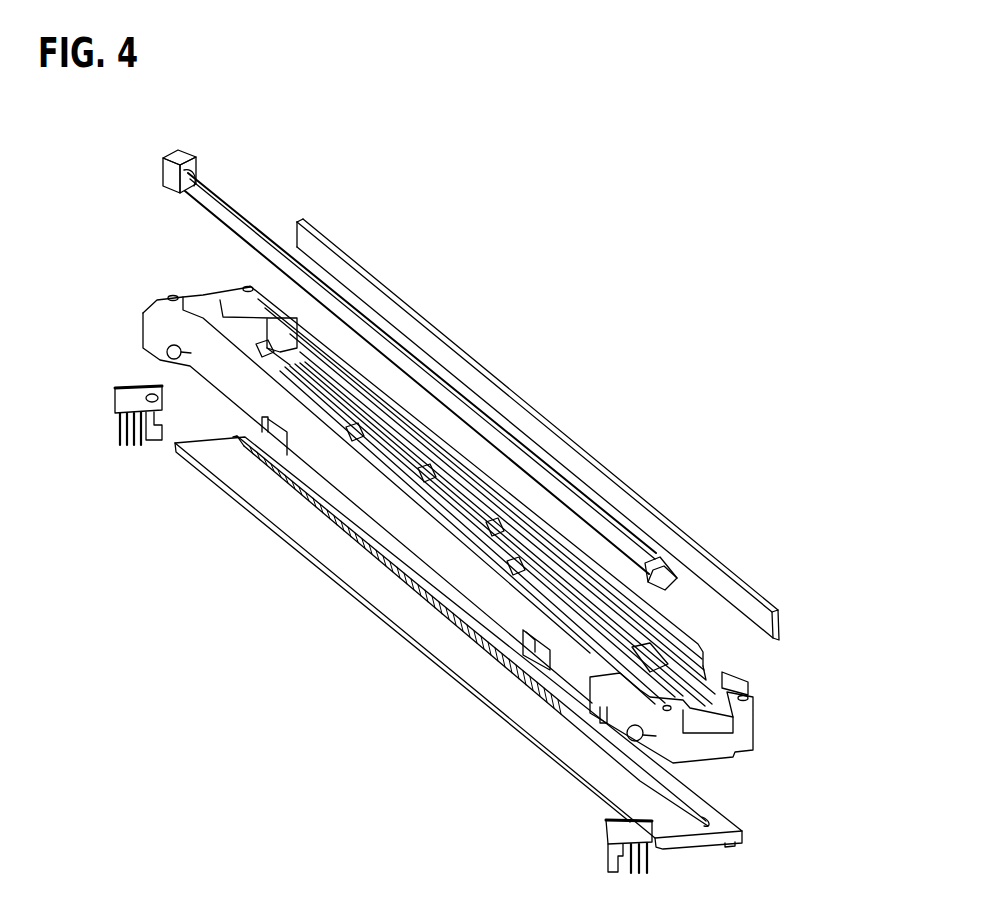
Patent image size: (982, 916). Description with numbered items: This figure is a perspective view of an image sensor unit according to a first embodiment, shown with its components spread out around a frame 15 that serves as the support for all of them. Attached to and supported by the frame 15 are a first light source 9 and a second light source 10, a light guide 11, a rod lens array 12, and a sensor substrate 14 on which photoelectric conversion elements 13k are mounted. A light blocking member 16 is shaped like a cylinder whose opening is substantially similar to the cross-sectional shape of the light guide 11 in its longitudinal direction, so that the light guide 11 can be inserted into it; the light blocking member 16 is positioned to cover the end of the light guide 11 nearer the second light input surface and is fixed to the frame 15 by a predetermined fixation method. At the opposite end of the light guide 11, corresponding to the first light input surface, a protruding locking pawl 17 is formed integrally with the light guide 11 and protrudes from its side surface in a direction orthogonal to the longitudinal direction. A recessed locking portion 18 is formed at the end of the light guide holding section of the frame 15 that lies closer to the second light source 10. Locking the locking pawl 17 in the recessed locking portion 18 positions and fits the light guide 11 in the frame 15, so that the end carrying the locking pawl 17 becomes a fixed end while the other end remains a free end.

The first light source 9 is at (606, 865).
The second light source 10 is at (118, 388).
The light guide 11 is at (283, 247).
The rod lens array 12 is at (779, 604).
The photoelectric conversion elements 13k is at (312, 498).
The sensor substrate 14 is at (385, 622).
The frame 15 is at (758, 724).
The light blocking member 16 is at (188, 158).
The locking pawl 17 is at (658, 570).
The recessed locking portion 18 is at (663, 698).